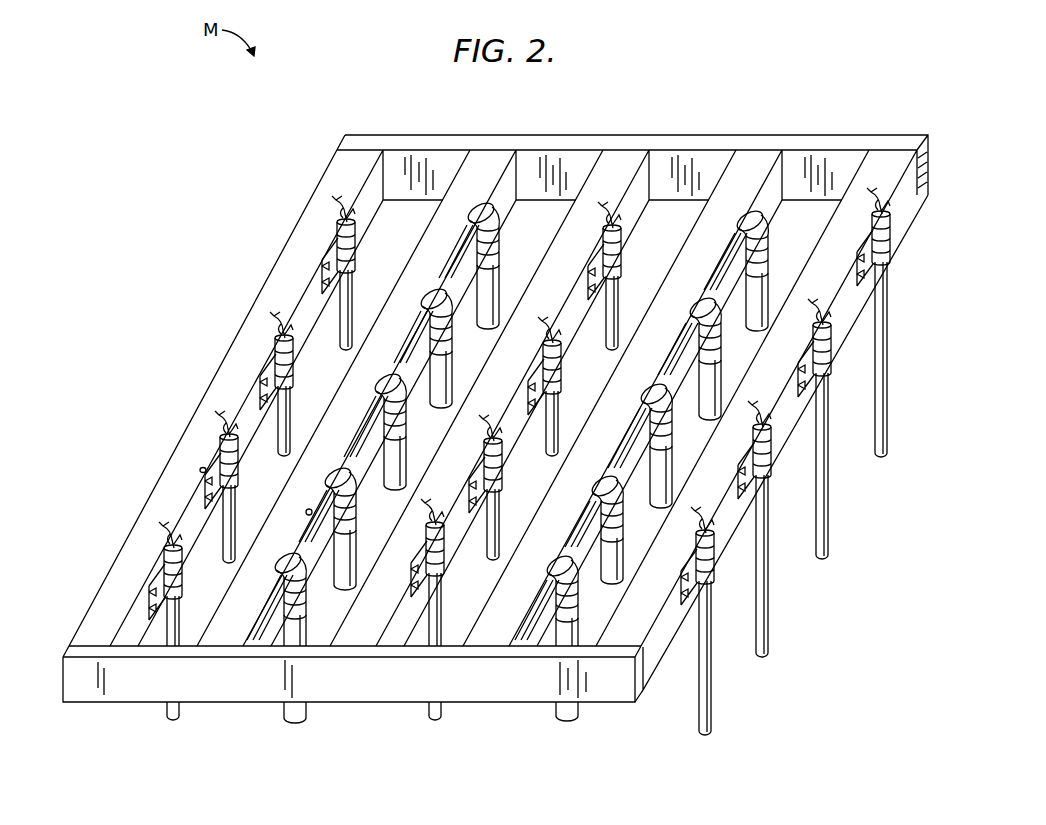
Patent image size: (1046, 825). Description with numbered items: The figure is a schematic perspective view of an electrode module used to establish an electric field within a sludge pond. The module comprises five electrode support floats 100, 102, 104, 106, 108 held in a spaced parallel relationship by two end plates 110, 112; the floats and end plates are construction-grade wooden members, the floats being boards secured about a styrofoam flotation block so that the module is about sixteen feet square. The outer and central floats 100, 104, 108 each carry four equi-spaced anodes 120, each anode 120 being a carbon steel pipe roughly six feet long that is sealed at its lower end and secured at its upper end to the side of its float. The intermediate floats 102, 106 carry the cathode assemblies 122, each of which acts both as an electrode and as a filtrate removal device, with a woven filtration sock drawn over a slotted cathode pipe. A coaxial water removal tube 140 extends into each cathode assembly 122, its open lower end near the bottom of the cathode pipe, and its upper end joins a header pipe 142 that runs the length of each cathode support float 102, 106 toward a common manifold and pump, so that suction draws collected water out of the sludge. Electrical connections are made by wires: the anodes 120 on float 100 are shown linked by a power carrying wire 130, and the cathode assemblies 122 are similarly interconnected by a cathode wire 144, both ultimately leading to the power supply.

The electrode support float 100 is at (376, 174).
The electrode support float 102 is at (510, 174).
The electrode support float 104 is at (644, 174).
The electrode support float 106 is at (778, 174).
The electrode support float 108 is at (910, 174).
The end plate 110 is at (806, 136).
The end plate 112 is at (357, 650).
The anode 120 is at (340, 338).
The cathode assembly 122 is at (511, 275).
The power carrying wire 130 is at (200, 466).
The water removal tube 140 is at (503, 211).
The header pipe 142 is at (466, 240).
The cathode wire 144 is at (307, 510).